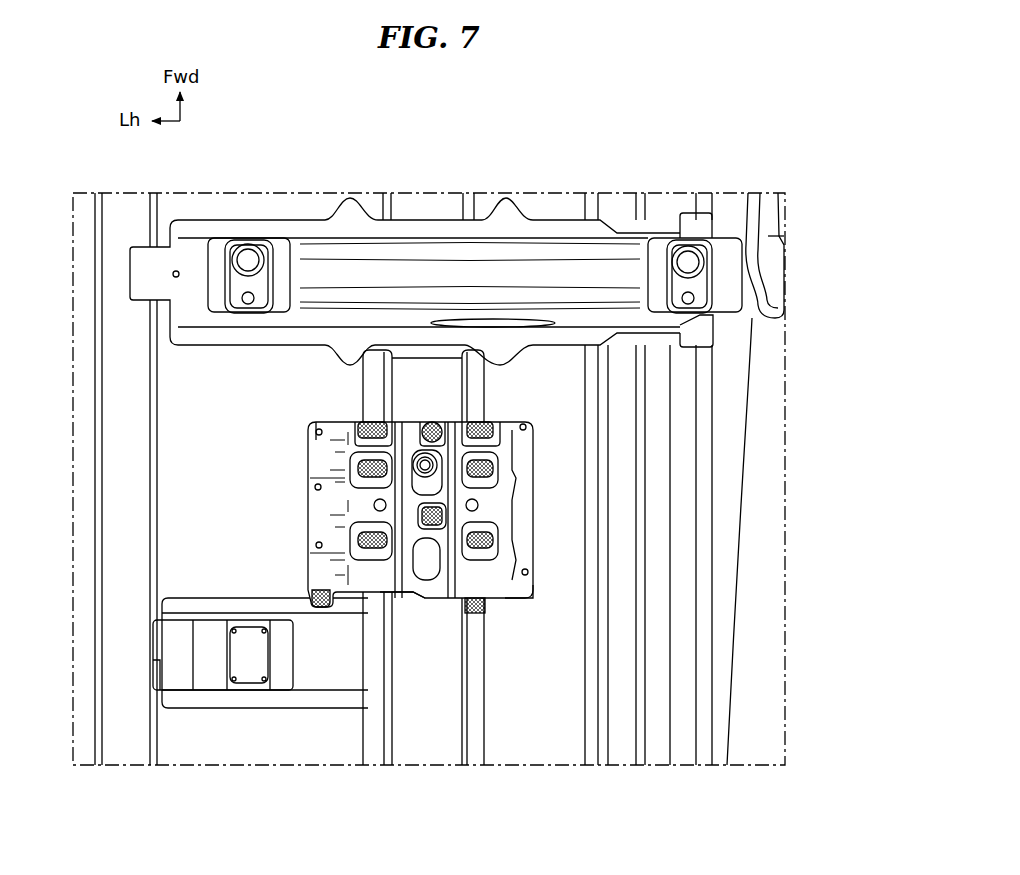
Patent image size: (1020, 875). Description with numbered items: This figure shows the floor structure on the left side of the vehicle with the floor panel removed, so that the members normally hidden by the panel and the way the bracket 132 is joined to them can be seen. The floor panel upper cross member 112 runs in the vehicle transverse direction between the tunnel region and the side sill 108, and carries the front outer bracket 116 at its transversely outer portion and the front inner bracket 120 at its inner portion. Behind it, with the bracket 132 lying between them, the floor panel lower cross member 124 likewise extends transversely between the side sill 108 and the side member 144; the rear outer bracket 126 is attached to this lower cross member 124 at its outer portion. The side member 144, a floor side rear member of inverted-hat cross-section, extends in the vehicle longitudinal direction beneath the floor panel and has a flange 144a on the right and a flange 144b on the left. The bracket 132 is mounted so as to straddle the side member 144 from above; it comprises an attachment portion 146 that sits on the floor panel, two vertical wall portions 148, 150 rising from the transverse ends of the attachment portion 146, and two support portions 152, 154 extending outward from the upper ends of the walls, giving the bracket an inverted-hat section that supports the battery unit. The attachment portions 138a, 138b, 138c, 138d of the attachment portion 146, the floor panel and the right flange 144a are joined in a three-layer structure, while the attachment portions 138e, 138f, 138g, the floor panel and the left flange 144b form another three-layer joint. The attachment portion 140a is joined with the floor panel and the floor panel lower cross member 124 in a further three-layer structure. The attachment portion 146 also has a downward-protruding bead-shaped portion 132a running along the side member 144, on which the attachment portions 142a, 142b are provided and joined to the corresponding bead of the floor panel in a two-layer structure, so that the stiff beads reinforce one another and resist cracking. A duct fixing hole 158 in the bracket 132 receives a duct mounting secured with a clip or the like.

The side sill 108 is at (100, 720).
The floor panel upper cross member 112 is at (478, 275).
The front outer bracket 116 is at (250, 258).
The front inner bracket 120 is at (688, 262).
The floor panel lower cross member 124 is at (315, 678).
The rear outer bracket 126 is at (245, 670).
The bracket 132 is at (378, 517).
The bead-shaped portion 132a is at (417, 592).
The attachment portion 138a is at (485, 612).
The attachment portion 138b is at (495, 545).
The attachment portion 138c is at (495, 465).
The attachment portion 138d is at (490, 420).
The attachment portion 138e is at (362, 540).
The attachment portion 138f is at (362, 468).
The attachment portion 138g is at (360, 420).
The attachment portion 140a is at (312, 598).
The attachment portion 142a is at (445, 515).
The attachment portion 142b is at (440, 422).
The side member 144 is at (422, 507).
The flange 144a is at (475, 703).
The flange 144b is at (370, 386).
The attachment portion 146 is at (410, 450).
The vertical wall portion 148 is at (330, 416).
The vertical wall portion 150 is at (505, 485).
The support portion 152 is at (315, 553).
The support portion 154 is at (522, 590).
The duct fixing hole 158 is at (315, 480).